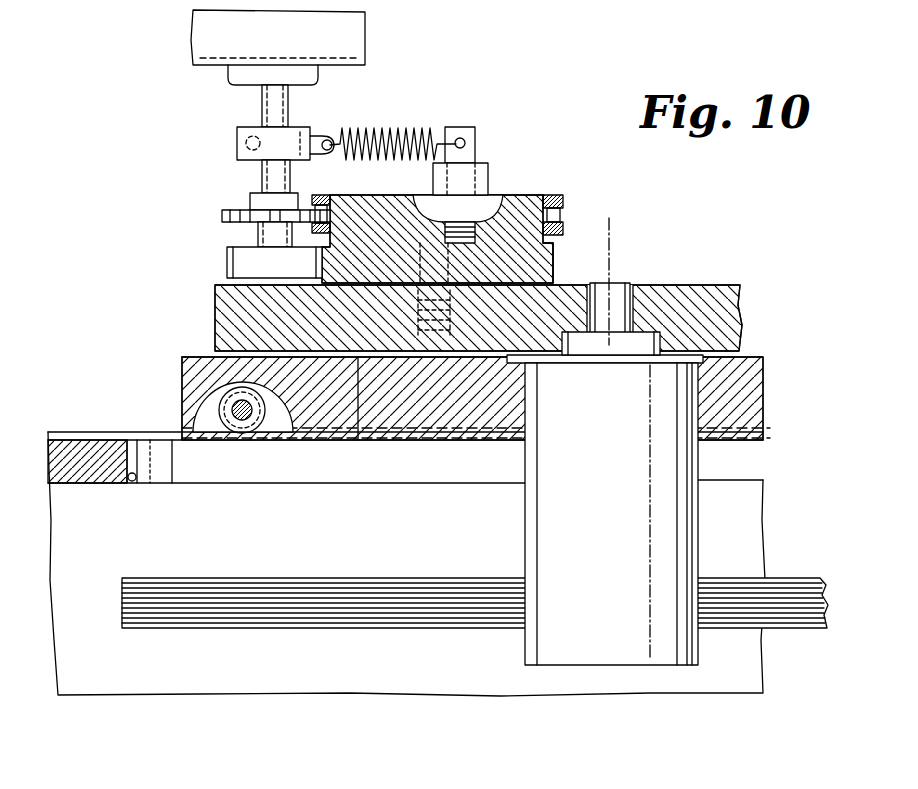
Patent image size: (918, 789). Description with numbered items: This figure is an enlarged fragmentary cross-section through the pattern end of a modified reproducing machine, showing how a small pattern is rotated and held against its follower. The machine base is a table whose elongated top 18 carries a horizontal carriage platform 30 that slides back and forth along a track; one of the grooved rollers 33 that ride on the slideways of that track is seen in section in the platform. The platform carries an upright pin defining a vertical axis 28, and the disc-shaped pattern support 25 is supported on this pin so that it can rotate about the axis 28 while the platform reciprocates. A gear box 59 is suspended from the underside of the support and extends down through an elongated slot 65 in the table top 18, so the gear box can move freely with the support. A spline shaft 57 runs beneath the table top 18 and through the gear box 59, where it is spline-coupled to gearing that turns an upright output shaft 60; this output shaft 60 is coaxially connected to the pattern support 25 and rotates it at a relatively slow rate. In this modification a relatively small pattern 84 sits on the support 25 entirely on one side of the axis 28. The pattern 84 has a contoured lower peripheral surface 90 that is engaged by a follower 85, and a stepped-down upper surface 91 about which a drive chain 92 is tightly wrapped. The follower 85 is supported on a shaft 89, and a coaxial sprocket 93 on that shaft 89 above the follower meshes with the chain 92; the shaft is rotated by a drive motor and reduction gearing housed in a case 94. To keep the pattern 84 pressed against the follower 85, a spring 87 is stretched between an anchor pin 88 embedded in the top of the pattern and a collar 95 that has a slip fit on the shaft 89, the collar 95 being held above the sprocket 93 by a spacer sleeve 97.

The table top 18 is at (70, 446).
The pattern support 25 is at (728, 286).
The vertical axis 28 is at (611, 232).
The carriage platform 30 is at (762, 357).
The roller 33 is at (255, 418).
The spline shaft 57 is at (158, 583).
The gear box 59 is at (533, 504).
The output shaft 60 is at (627, 284).
The elongated slot 65 is at (133, 487).
The pattern 84 is at (519, 196).
The follower 85 is at (227, 263).
The spring 87 is at (412, 128).
The anchor pin 88 is at (477, 141).
The shaft 89 is at (289, 112).
The contoured lower peripheral surface 90 is at (554, 263).
The stepped-down upper surface 91 is at (547, 196).
The drive chain 92 is at (563, 216).
The sprocket 93 is at (222, 217).
The case 94 is at (364, 41).
The collar 95 is at (237, 133).
The spacer sleeve 97 is at (262, 179).